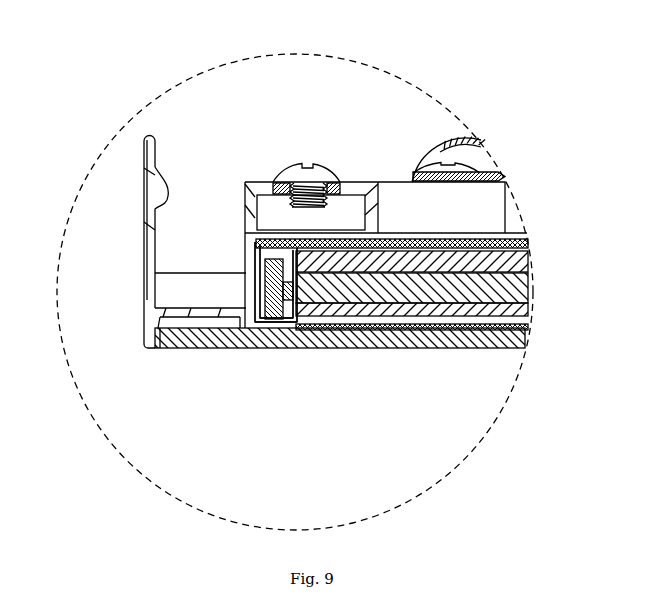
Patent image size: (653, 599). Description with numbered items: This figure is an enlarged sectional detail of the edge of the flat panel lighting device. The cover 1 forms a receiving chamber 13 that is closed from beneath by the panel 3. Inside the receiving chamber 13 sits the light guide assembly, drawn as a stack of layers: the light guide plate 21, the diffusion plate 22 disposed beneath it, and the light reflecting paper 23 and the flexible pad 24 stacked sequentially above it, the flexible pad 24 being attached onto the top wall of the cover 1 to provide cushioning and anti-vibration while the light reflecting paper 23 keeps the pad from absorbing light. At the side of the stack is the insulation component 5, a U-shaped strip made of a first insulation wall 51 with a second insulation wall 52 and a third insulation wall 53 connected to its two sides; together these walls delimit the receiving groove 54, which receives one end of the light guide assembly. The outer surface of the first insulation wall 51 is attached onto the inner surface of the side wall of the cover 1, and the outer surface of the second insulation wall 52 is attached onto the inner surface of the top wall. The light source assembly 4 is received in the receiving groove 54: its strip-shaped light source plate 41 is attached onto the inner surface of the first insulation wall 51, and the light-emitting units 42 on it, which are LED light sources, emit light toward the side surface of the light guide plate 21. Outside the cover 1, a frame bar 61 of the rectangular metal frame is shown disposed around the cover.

The cover 1 is at (487, 248).
The panel 3 is at (425, 337).
The light source assembly 4 is at (271, 320).
The insulation component 5 is at (258, 310).
The receiving chamber 13 is at (520, 345).
The light guide plate 21 is at (493, 295).
The diffusion plate 22 is at (520, 309).
The light reflecting paper 23 is at (527, 273).
The flexible pad 24 is at (514, 258).
The light source plate 41 is at (285, 301).
The light-emitting unit 42 is at (296, 306).
The first insulation wall 51 is at (262, 292).
The second insulation wall 52 is at (340, 237).
The third insulation wall 53 is at (326, 322).
The receiving groove 54 is at (289, 243).
The frame bar 61 is at (146, 264).